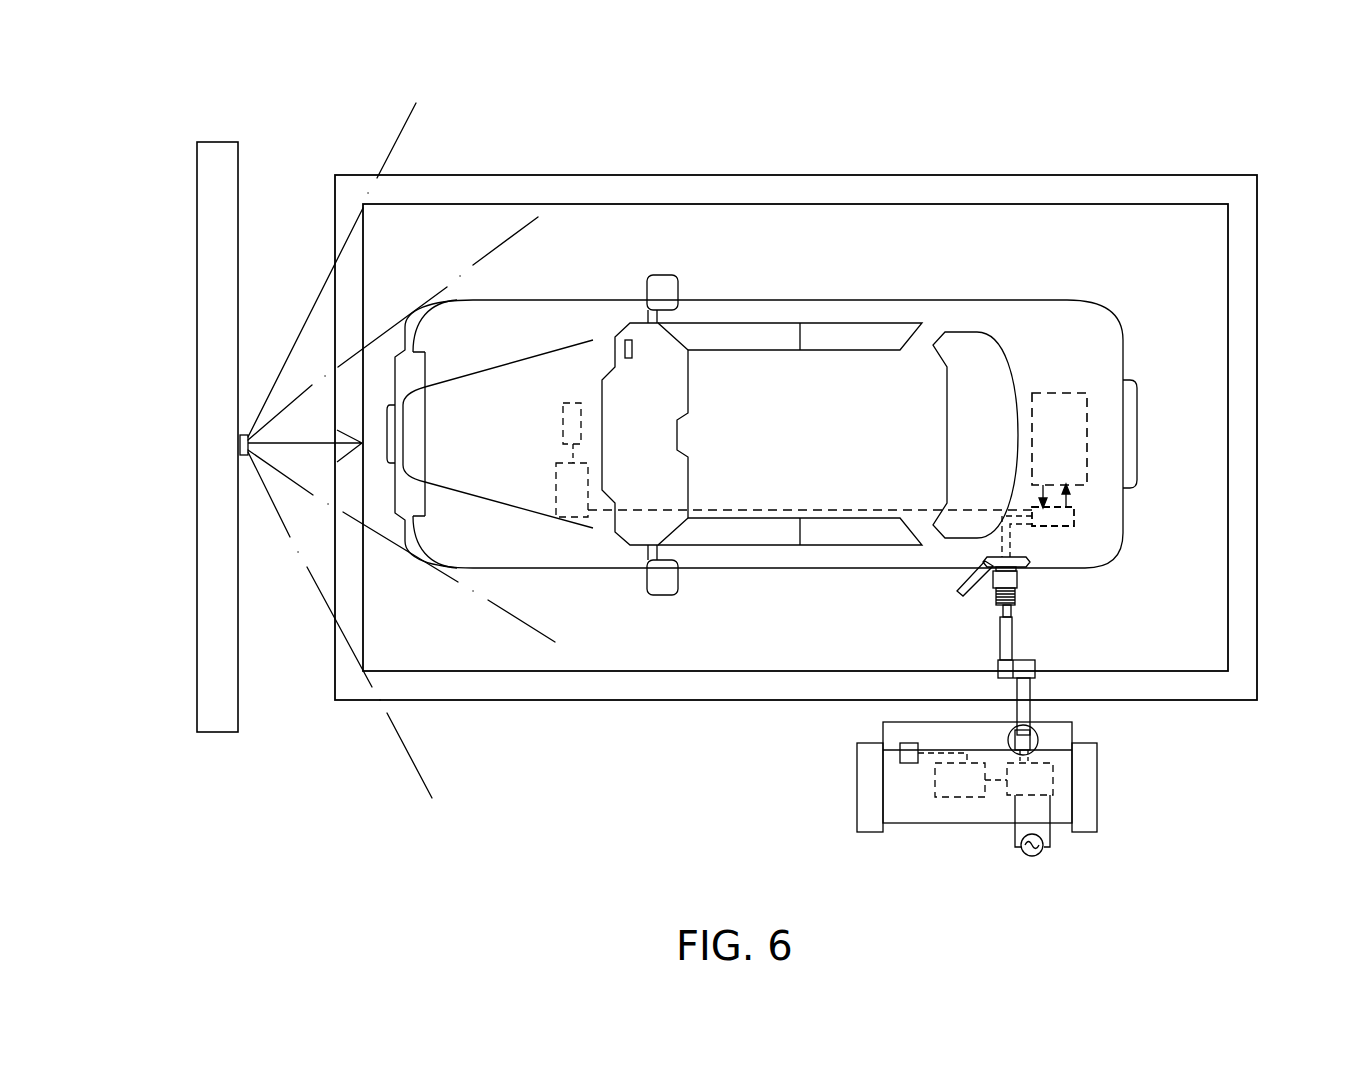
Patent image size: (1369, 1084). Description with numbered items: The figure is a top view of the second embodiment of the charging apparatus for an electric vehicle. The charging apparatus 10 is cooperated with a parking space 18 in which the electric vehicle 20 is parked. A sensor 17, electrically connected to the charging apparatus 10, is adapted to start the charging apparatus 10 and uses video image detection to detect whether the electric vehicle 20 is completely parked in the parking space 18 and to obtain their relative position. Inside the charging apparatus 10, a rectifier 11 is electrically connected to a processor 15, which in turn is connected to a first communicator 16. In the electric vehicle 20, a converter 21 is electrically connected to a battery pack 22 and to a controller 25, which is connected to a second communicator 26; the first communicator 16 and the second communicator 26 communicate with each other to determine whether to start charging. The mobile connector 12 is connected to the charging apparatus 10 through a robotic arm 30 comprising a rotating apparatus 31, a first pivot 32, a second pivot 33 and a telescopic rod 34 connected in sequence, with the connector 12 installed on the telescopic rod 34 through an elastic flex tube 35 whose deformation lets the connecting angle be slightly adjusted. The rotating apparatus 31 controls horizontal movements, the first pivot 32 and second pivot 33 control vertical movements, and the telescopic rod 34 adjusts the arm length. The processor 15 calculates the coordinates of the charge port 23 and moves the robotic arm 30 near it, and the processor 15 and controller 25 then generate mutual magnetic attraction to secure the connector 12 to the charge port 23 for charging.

The charging apparatus 10 is at (857, 803).
The rectifier 11 is at (1057, 788).
The mobile connector 12 is at (1022, 583).
The processor 15 is at (962, 798).
The first communicator 16 is at (900, 752).
The sensor 17 is at (242, 438).
The parking space 18 is at (1082, 173).
The electric vehicle 20 is at (815, 290).
The converter 21 is at (1075, 517).
The battery pack 22 is at (1087, 427).
The charge port 23 is at (1025, 556).
The controller 25 is at (575, 517).
The second communicator 26 is at (565, 403).
The robotic arm 30 is at (1037, 687).
The rotating apparatus 31 is at (1040, 735).
The first pivot 32 is at (1043, 745).
The second pivot 33 is at (998, 668).
The telescopic rod 34 is at (1005, 633).
The elastic flex tube 35 is at (997, 590).